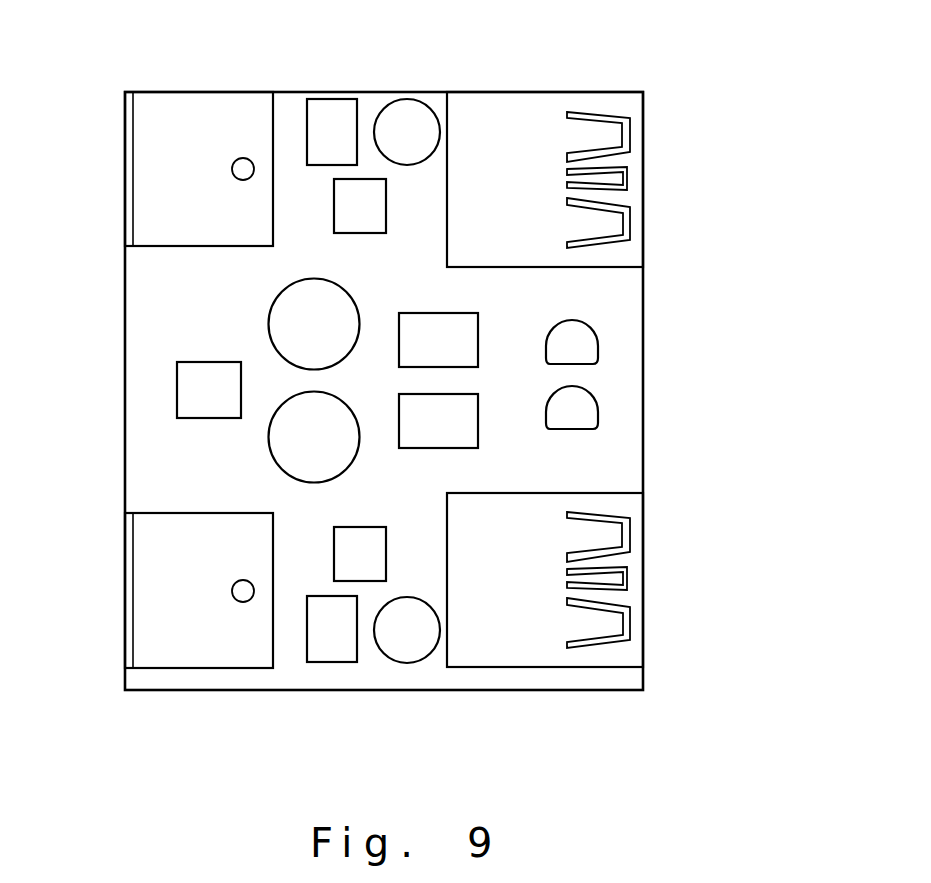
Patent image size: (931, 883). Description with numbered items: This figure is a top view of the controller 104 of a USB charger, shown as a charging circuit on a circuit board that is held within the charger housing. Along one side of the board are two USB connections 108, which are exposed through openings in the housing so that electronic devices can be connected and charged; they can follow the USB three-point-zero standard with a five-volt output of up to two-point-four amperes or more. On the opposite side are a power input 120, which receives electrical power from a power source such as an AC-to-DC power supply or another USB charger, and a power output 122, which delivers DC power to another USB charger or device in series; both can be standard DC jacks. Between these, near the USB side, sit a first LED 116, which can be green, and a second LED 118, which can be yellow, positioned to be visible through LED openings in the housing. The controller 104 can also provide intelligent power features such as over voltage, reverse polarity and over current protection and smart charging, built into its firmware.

The controller 104 is at (411, 389).
The USB connections 108 is at (538, 115).
The first LED 116 is at (587, 350).
The second LED 118 is at (587, 414).
The power input 120 is at (162, 604).
The power output 122 is at (152, 170).